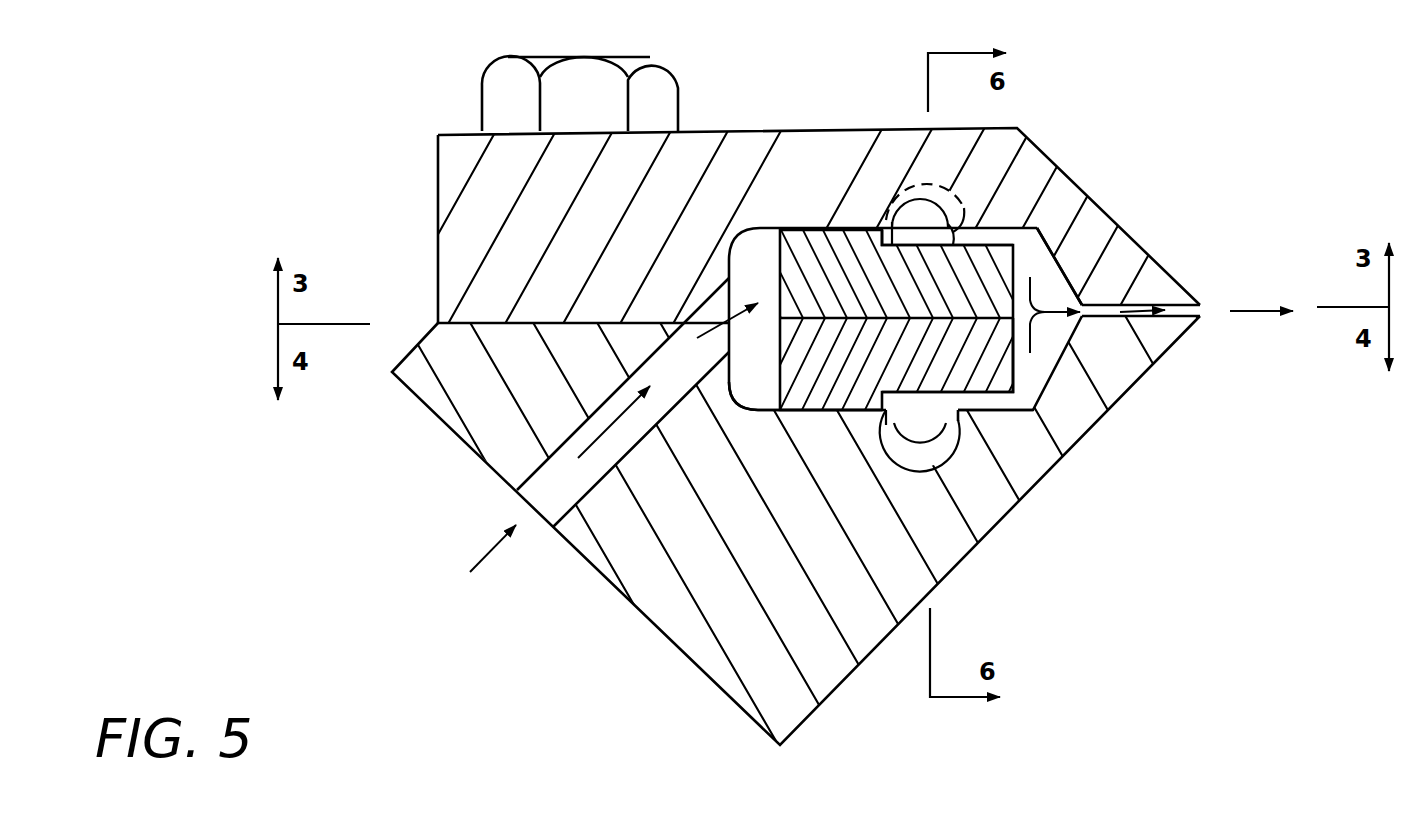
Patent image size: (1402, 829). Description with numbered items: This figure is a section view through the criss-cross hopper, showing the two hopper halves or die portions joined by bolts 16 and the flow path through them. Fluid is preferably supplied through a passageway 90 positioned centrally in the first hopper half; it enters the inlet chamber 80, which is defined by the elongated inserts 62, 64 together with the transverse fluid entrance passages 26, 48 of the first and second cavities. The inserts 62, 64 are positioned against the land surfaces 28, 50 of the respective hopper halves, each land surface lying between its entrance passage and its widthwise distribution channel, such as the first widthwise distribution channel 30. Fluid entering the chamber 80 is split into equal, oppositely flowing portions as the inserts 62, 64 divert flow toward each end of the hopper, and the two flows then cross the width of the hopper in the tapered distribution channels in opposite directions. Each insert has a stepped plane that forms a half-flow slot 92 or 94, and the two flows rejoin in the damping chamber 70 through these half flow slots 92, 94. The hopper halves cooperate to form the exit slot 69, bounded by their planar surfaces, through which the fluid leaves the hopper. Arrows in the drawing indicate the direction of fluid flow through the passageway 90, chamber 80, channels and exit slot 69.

The bolts 16 is at (680, 92).
The transverse fluid passage 26 is at (735, 412).
The land surface 28 is at (826, 412).
The first widthwise distribution channel 30 is at (950, 433).
The transverse fluid entrance passage 48 is at (751, 228).
The land surface 50 is at (817, 242).
The elongated insert 62 is at (983, 227).
The elongated insert 64 is at (993, 362).
The exit slot 69 is at (1238, 277).
The damping chamber 70 is at (1078, 232).
The inlet chamber 80 is at (745, 262).
The passageway 90 is at (552, 503).
The half-flow slot 92 is at (951, 205).
The half-flow slot 94 is at (990, 398).